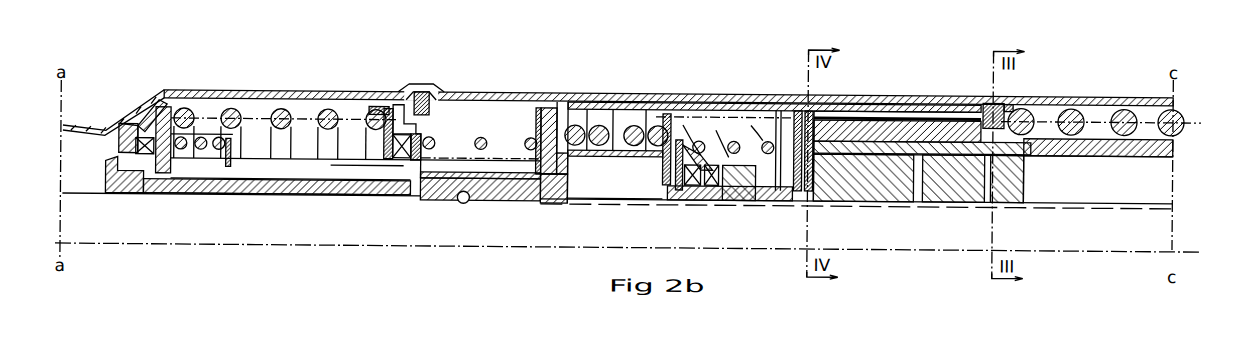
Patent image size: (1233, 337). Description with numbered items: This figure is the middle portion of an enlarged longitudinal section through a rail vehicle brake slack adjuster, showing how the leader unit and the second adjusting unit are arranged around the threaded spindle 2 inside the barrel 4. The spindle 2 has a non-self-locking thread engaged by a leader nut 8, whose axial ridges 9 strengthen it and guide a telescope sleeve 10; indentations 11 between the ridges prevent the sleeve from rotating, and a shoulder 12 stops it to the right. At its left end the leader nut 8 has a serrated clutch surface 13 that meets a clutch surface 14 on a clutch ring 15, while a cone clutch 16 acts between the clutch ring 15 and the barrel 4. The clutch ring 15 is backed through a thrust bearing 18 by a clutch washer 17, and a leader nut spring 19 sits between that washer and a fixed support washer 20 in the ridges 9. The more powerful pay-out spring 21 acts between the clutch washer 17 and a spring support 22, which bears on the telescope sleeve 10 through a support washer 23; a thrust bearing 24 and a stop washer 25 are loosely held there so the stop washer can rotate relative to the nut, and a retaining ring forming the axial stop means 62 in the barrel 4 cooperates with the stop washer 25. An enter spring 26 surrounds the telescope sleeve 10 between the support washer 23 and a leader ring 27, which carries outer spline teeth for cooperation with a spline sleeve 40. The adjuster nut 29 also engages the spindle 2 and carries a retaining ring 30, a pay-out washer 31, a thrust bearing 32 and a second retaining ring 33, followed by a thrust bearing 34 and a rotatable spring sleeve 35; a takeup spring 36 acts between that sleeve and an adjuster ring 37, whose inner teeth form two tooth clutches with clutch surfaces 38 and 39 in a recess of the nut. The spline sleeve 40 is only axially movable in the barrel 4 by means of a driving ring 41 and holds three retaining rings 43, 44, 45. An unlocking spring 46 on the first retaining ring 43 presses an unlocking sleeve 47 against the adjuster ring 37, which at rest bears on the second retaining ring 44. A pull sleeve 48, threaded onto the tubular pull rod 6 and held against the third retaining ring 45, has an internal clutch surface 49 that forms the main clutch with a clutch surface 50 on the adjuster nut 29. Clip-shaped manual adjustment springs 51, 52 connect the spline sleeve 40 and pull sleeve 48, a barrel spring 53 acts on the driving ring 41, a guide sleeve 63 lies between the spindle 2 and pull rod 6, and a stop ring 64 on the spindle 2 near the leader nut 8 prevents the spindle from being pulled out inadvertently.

The spindle 2 is at (367, 205).
The barrel 4 is at (325, 92).
The pull rod 6 is at (1096, 138).
The leader nut 8 is at (320, 194).
The axial ridges 9 is at (336, 170).
The telescope sleeve 10 is at (561, 145).
The axial indentations 11 is at (445, 168).
The shoulder 12 is at (562, 200).
The clutch surface 13 is at (110, 170).
The clutch surface 14 is at (126, 128).
The clutch ring 15 is at (140, 150).
The clutch 16 is at (142, 124).
The clutch washer 17 is at (166, 110).
The thrust bearing 18 is at (150, 135).
The leader nut spring 19 is at (200, 146).
The support washer 20 is at (228, 150).
The pay-out spring 21 is at (283, 108).
The spring support 22 is at (378, 104).
The support washer 23 is at (416, 140).
The thrust bearing 24 is at (401, 148).
The stop washer 25 is at (388, 120).
The enter spring 26 is at (480, 134).
The leader ring 27 is at (552, 185).
The adjuster nut 29 is at (1005, 170).
The retaining ring 30 is at (688, 172).
The pay-out washer 31 is at (722, 185).
The thrust bearing 32 is at (666, 150).
The second retaining ring 33 is at (692, 140).
The thrust bearing 34 is at (722, 150).
The spring sleeve 35 is at (696, 136).
The takeup spring 36 is at (731, 136).
The adjuster ring 37 is at (760, 134).
The toothed clutch surface 38 is at (796, 160).
The toothed clutch surface 39 is at (808, 170).
The spline sleeve 40 is at (548, 125).
The driving ring 41 is at (1010, 100).
The first retaining ring 43 is at (537, 125).
The second retaining ring 44 is at (778, 128).
The third retaining ring 45 is at (990, 104).
The unlocking spring 46 is at (600, 122).
The unlocking sleeve 47 is at (765, 136).
The pull sleeve 48 is at (900, 104).
The clutch surface 49 is at (868, 165).
The clutch surface 50 is at (950, 165).
The manual adjustment spring 51 is at (795, 118).
The manual adjustment spring 52 is at (842, 111).
The barrel spring 53 is at (1125, 108).
The axial stop means 62 is at (420, 81).
The guide sleeve 63 is at (1016, 175).
The stop ring 64 is at (466, 200).